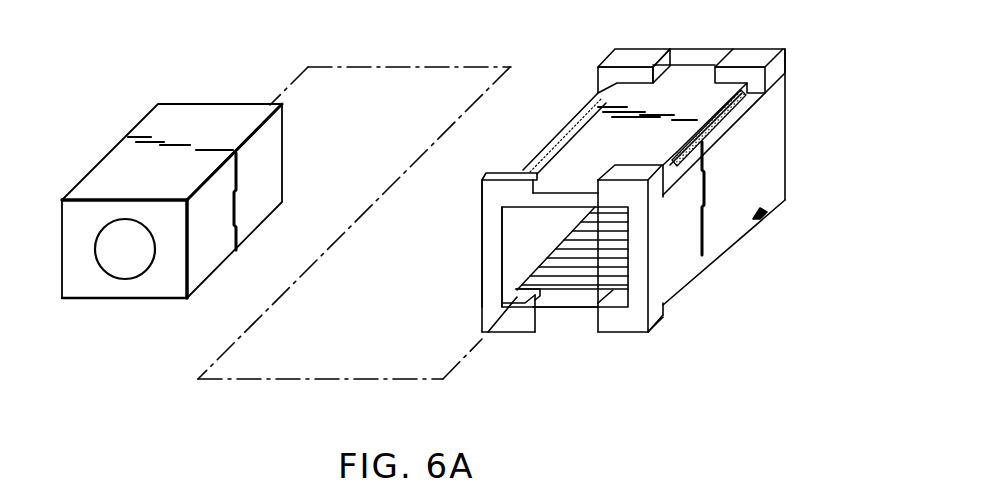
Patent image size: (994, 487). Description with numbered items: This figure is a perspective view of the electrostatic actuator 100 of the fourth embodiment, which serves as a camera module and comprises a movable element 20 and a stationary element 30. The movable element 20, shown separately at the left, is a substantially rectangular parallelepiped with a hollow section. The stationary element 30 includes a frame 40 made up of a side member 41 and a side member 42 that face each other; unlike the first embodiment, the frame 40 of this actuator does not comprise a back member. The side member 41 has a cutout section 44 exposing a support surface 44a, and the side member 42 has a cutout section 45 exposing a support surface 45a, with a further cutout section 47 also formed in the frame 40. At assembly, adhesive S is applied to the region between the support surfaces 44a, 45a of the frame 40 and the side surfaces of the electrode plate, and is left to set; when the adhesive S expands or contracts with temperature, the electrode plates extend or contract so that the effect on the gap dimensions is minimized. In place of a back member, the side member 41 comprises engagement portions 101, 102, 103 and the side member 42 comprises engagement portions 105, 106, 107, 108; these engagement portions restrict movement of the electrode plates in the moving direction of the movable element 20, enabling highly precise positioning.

The movable element 20 is at (86, 170).
The electrostatic actuator 100 is at (537, 80).
The stationary element 30 is at (706, 272).
The frame 40 is at (658, 45).
The side member 41 is at (482, 186).
The side member 42 is at (780, 168).
The cutout section 44 is at (600, 78).
The support surface 44a is at (534, 166).
The cutout section 45 is at (728, 67).
The support surface 45a is at (770, 97).
The cutout section 47 is at (690, 288).
The engagement portion 101 is at (497, 172).
The engagement portion 102 is at (627, 48).
The engagement portion 103 is at (512, 333).
The engagement portion 105 is at (618, 168).
The engagement portion 106 is at (768, 50).
The engagement portion 107 is at (620, 333).
The engagement portion 108 is at (762, 218).
The adhesive S is at (727, 133).